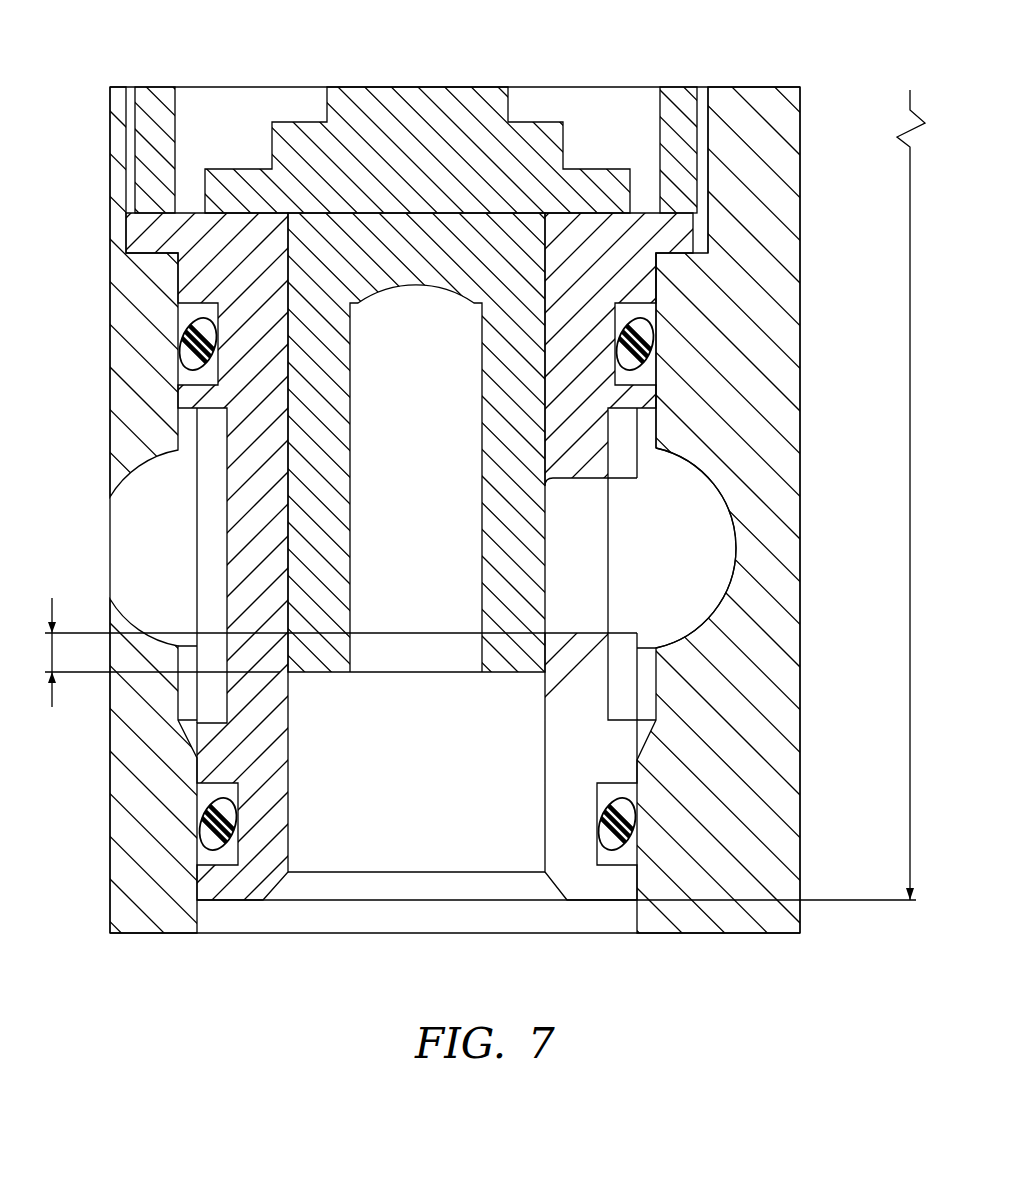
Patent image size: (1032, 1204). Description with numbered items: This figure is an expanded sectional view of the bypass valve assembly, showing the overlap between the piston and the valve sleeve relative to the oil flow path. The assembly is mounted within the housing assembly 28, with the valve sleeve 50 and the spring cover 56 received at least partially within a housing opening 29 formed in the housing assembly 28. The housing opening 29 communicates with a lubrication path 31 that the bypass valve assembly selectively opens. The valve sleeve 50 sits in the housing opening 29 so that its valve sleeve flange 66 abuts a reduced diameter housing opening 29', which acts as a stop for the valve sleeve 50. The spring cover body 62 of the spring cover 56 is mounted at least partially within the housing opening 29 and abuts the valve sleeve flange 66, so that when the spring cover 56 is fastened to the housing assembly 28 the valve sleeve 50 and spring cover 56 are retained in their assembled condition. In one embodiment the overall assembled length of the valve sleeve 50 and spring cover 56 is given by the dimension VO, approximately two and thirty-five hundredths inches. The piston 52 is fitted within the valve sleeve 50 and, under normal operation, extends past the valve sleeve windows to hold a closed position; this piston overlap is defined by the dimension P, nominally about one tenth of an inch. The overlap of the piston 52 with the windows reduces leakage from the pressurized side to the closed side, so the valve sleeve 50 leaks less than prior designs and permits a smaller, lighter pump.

The housing assembly 28 is at (808, 874).
The housing opening 29 is at (717, 132).
The reduced diameter housing opening 29' is at (760, 350).
The lubrication path 31 is at (700, 573).
The valve sleeve 50 is at (602, 717).
The piston 52 is at (540, 512).
The spring cover 56 is at (693, 143).
The spring cover body 62 is at (678, 103).
The valve sleeve flange 66 is at (678, 237).
The piston overlap dimension P is at (295, 633).
The overall valve sleeve and spring cover dimension VO is at (912, 495).